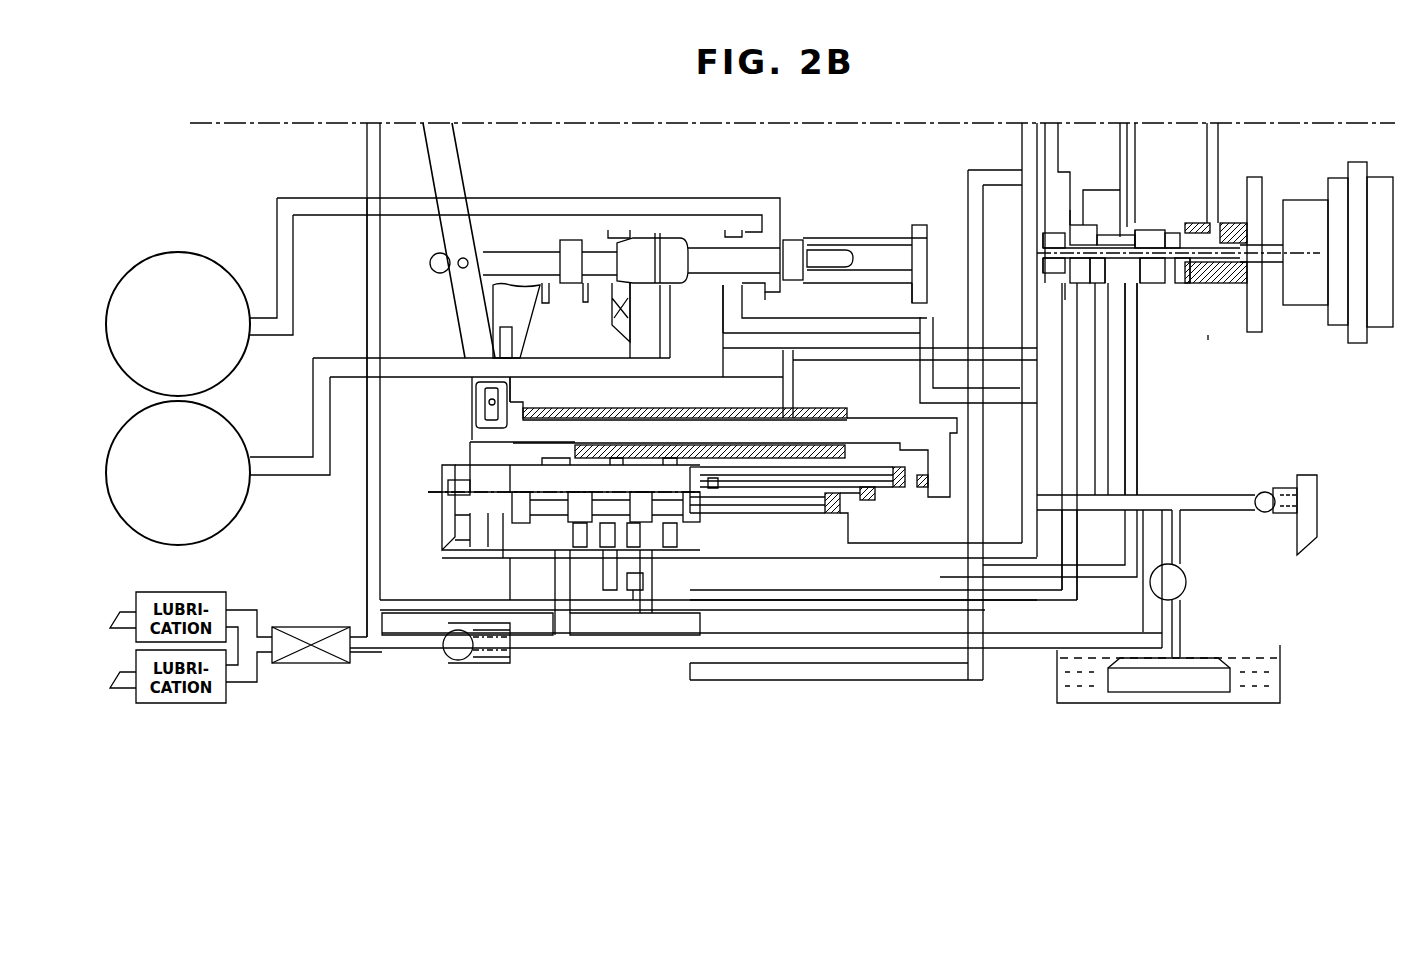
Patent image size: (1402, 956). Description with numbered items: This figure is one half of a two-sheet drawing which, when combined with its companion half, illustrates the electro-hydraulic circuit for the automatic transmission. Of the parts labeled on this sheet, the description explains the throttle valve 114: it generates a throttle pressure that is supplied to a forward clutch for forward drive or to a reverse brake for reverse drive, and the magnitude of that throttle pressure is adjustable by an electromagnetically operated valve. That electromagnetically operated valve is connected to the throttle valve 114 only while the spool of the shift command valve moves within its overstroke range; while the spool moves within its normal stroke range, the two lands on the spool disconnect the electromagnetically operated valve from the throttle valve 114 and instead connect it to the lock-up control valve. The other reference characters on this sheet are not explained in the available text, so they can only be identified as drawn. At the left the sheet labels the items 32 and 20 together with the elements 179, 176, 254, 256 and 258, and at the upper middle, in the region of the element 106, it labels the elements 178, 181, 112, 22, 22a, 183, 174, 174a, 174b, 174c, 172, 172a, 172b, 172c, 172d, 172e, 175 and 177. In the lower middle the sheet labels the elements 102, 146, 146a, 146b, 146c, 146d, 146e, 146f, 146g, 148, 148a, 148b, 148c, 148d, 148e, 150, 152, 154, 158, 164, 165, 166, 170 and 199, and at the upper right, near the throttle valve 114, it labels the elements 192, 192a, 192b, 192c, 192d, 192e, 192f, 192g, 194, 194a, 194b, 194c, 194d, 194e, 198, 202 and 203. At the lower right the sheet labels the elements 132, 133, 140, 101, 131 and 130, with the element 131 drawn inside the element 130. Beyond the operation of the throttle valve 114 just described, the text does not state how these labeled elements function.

The driver pulley cylinder chamber 20 is at (235, 512).
The pulley flange 22 is at (525, 308).
The pulley flange hub 22a is at (520, 335).
The follower pulley cylinder chamber 32 is at (233, 367).
The pump 101 is at (1198, 569).
The valve housing 102 is at (438, 570).
The housing 106 is at (806, 193).
The pulley 112 is at (424, 297).
The throttle valve 114 is at (1212, 348).
The oil tank 130 is at (1282, 660).
The filter 131 is at (1195, 657).
The supply line 132 is at (1180, 494).
The relief valve 133 is at (1270, 491).
The passage 140 is at (1108, 578).
The valve spool 146 is at (523, 510).
The spool end 146a is at (445, 527).
The spool land 146b is at (503, 559).
The spool land 146c is at (560, 490).
The spool land 146d is at (590, 525).
The spool land 146e is at (650, 525).
The spool land 146f is at (640, 592).
The spool end 146g is at (740, 462).
The valve sleeve 148 is at (455, 512).
The sleeve port 148a is at (468, 548).
The sleeve port 148b is at (448, 482).
The sleeve port 148c is at (580, 500).
The sleeve port 148d is at (615, 493).
The sleeve port 148e is at (690, 525).
The cylinder 150 is at (882, 497).
The cylinder housing 152 is at (800, 400).
The piston 154 is at (868, 513).
The passage 158 is at (985, 425).
The drain passage 164 is at (563, 650).
The drain passage 165 is at (697, 672).
The passage 166 is at (511, 570).
The passage 170 is at (700, 585).
The shaft tube 172 is at (853, 238).
The tube portion 172a is at (612, 290).
The tube flange 172b is at (665, 292).
The tube portion 172c is at (734, 315).
The tube shoulder 172d is at (768, 293).
The tube end 172e is at (920, 288).
The shaft 174 is at (508, 252).
The shaft collar 174a is at (573, 243).
The shaft enlarged portion 174b is at (680, 241).
The shaft collar 174c is at (791, 240).
The flange 175 is at (915, 232).
The passage 176 is at (352, 384).
The bearing 177 is at (631, 320).
The belt 178 is at (432, 163).
The passage 179 is at (336, 215).
The roller 181 is at (430, 259).
The slot 183 is at (472, 418).
The servo valve 192 is at (1120, 237).
The servo valve port 192a is at (1057, 258).
The servo valve port 192b is at (1100, 280).
The servo valve port 192c is at (1103, 292).
The servo valve port 192d is at (1130, 290).
The servo valve port 192e is at (1147, 284).
The servo valve port 192f is at (1192, 284).
The servo valve seal 192g is at (1205, 284).
The servo spool 194 is at (1045, 262).
The spool land 194a is at (1050, 240).
The spool land 194b is at (1052, 243).
The spool land 194c is at (1150, 240).
The spool seal 194d is at (1192, 222).
The spool rod 194e is at (1258, 226).
The actuator 198 is at (1376, 172).
The passage 199 is at (633, 653).
The spring 202 is at (1077, 217).
The stopper plate 203 is at (1216, 166).
The passage 254 is at (366, 284).
The lubrication valve 256 is at (315, 627).
The check valve 258 is at (446, 658).